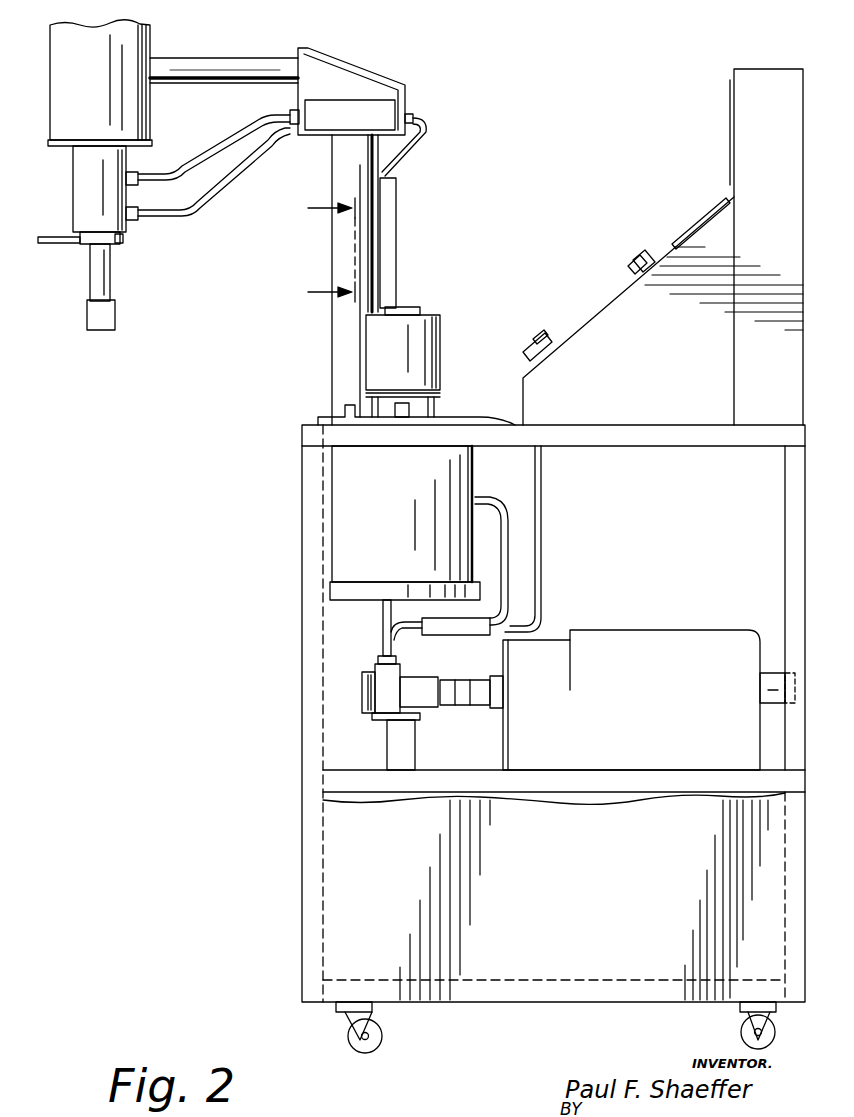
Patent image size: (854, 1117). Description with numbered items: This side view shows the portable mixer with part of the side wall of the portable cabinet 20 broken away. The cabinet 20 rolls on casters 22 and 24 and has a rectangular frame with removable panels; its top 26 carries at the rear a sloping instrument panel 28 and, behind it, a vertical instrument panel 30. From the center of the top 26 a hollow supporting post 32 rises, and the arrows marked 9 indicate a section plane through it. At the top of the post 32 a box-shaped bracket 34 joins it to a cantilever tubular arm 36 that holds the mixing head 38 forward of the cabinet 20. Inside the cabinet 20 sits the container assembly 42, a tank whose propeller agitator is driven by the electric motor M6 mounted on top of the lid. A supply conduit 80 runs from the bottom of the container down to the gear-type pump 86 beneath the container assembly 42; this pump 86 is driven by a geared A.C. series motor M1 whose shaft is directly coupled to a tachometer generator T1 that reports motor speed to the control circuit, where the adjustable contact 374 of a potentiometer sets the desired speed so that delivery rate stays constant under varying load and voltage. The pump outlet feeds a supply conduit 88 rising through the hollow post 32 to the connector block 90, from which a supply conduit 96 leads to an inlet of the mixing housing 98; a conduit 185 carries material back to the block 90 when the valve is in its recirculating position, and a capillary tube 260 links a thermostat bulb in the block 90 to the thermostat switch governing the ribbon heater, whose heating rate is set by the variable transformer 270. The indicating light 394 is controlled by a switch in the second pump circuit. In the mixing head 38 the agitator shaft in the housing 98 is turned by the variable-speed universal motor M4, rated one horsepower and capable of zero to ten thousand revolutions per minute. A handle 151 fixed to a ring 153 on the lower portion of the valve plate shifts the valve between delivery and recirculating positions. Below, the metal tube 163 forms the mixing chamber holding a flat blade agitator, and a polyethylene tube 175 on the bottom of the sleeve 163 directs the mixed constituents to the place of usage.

The portable cabinet 20 is at (508, 1002).
The caster 22 is at (742, 1030).
The caster 24 is at (360, 1046).
The top 26 is at (505, 425).
The sloping instrument panel 28 is at (603, 306).
The vertical instrument panel 30 is at (734, 72).
The hollow supporting post 32 is at (342, 343).
The box-shaped bracket 34 is at (358, 68).
The cantilever tubular arm 36 is at (257, 70).
The mixing head 38 is at (152, 100).
The container assembly 42 is at (332, 523).
The supply conduit 80 is at (385, 612).
The gear-type pump 86 is at (380, 705).
The supply conduit 88 is at (490, 505).
The connector block 90 is at (318, 128).
The supply conduit 96 is at (210, 158).
The mixing housing 98 is at (80, 193).
The handle 151 is at (58, 246).
The ring 153 is at (122, 240).
The metal tube 163 is at (110, 291).
The polyethylene tube 175 is at (112, 318).
The conduit 185 is at (196, 203).
The capillary tube 260 is at (420, 134).
The variable transformer 270 is at (538, 338).
The adjustable contact 374 is at (640, 252).
The indicating light 394 is at (700, 213).
The section line 9 is at (317, 252).
The motor M1 is at (660, 640).
The motor M4 is at (115, 38).
The electric motor M6 is at (418, 330).
The tachometer generator T1 is at (768, 705).